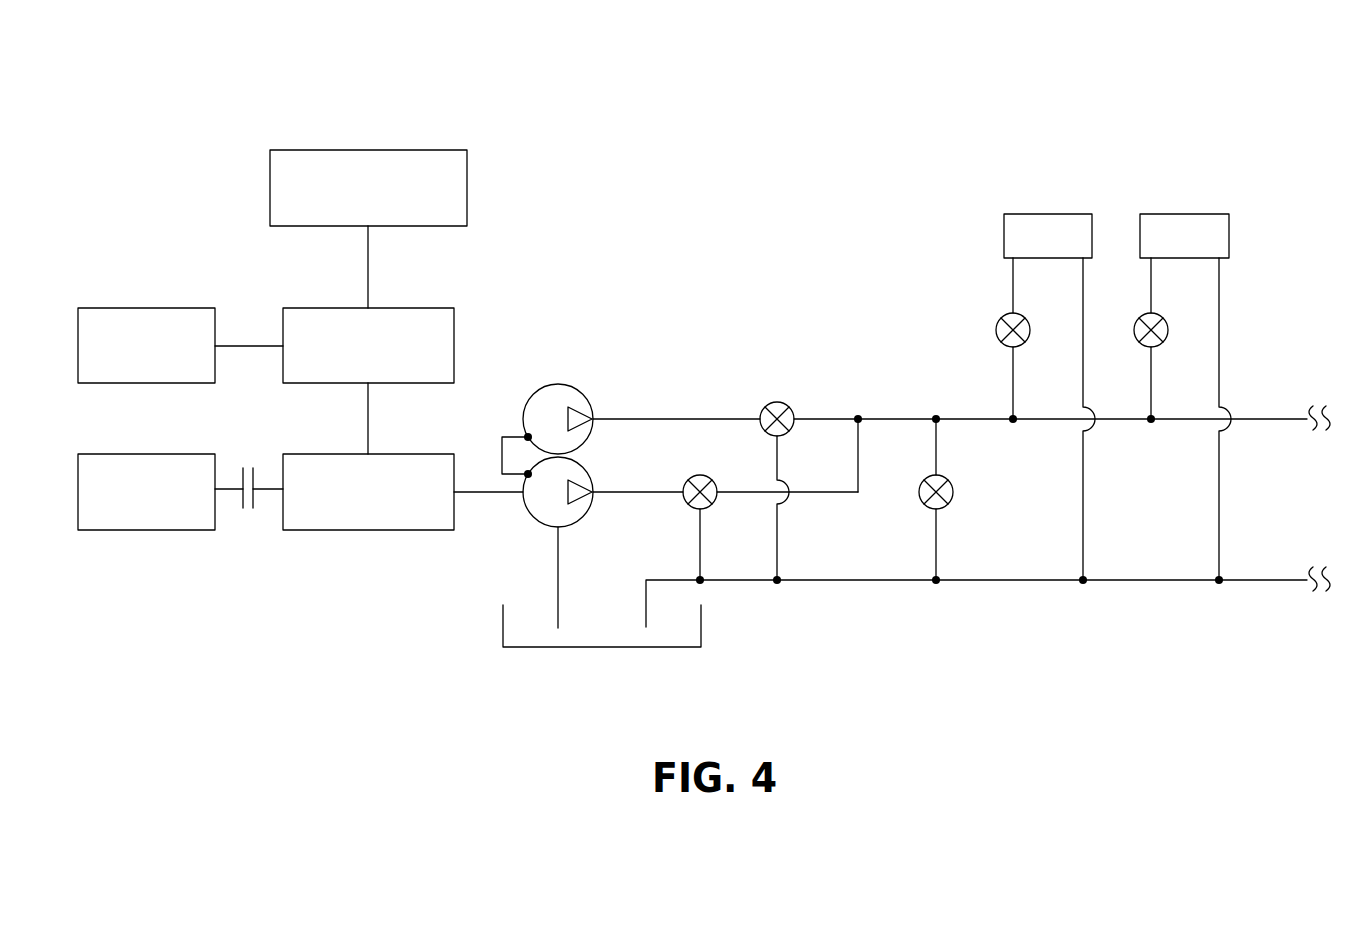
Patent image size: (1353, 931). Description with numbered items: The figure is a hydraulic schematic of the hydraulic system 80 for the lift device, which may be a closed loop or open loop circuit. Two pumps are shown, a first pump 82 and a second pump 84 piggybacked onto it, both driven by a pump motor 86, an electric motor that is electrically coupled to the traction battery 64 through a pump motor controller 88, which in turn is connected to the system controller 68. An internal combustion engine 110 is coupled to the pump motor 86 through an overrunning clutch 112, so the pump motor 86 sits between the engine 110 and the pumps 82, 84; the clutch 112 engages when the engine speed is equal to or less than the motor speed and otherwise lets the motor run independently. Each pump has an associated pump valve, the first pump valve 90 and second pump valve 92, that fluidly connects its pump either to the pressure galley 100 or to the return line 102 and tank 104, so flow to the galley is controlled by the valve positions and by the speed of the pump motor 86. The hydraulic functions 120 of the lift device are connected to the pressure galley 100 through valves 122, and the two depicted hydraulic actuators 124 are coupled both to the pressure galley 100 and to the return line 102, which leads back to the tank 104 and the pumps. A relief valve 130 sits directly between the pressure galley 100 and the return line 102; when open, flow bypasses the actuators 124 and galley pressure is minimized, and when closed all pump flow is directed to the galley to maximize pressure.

The hydraulic system 80 is at (888, 87).
The system controller 68 is at (317, 150).
The traction battery 64 is at (167, 308).
The pump motor controller 88 is at (326, 308).
The internal combustion engine 110 is at (167, 454).
The pump motor 86 is at (326, 454).
The overrunning clutch 112 is at (243, 504).
The second pump 84 is at (560, 385).
The first pump 82 is at (533, 518).
The second pump valve 92 is at (777, 402).
The first pump valve 90 is at (700, 475).
The pressure galley 100 is at (961, 418).
The relief valve 130 is at (953, 492).
The return line 102 is at (988, 580).
The tank 104 is at (538, 648).
The hydraulic functions 120 is at (1178, 153).
The hydraulic actuators 124 is at (1048, 214).
The valves 122 is at (995, 330).